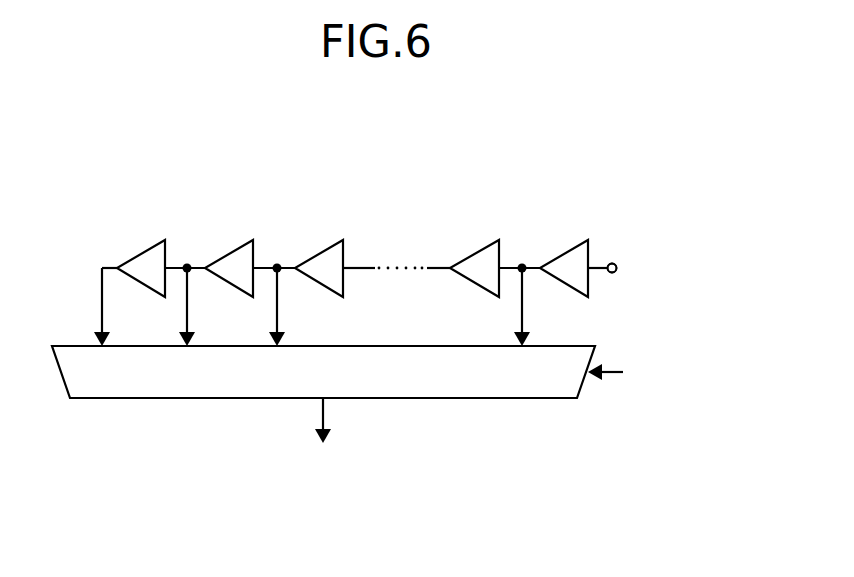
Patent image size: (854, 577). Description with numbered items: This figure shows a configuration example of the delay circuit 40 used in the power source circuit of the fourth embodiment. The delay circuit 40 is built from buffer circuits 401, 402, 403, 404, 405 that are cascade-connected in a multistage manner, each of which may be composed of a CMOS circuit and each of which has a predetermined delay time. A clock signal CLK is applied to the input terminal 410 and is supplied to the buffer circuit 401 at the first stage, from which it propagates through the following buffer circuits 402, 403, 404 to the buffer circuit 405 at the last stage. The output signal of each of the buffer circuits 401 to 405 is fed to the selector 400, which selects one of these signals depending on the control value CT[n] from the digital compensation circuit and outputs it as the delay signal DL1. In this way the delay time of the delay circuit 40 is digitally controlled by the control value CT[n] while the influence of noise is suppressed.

The delay circuit 40 is at (490, 138).
The buffer circuit 401 is at (562, 252).
The buffer circuit 402 is at (474, 252).
The buffer circuit 403 is at (319, 252).
The buffer circuit 404 is at (232, 252).
The buffer circuit 405 is at (142, 252).
The input terminal 410 is at (612, 263).
The selector 400 is at (502, 398).